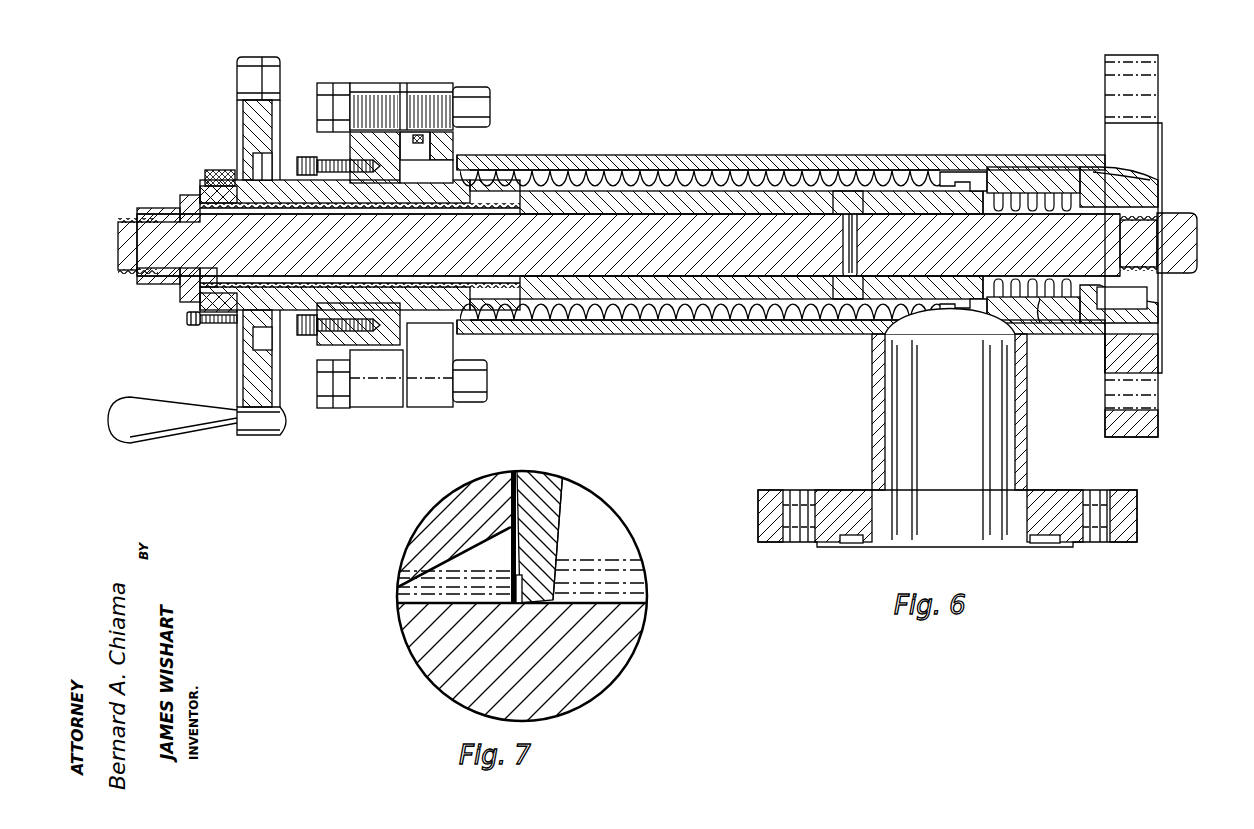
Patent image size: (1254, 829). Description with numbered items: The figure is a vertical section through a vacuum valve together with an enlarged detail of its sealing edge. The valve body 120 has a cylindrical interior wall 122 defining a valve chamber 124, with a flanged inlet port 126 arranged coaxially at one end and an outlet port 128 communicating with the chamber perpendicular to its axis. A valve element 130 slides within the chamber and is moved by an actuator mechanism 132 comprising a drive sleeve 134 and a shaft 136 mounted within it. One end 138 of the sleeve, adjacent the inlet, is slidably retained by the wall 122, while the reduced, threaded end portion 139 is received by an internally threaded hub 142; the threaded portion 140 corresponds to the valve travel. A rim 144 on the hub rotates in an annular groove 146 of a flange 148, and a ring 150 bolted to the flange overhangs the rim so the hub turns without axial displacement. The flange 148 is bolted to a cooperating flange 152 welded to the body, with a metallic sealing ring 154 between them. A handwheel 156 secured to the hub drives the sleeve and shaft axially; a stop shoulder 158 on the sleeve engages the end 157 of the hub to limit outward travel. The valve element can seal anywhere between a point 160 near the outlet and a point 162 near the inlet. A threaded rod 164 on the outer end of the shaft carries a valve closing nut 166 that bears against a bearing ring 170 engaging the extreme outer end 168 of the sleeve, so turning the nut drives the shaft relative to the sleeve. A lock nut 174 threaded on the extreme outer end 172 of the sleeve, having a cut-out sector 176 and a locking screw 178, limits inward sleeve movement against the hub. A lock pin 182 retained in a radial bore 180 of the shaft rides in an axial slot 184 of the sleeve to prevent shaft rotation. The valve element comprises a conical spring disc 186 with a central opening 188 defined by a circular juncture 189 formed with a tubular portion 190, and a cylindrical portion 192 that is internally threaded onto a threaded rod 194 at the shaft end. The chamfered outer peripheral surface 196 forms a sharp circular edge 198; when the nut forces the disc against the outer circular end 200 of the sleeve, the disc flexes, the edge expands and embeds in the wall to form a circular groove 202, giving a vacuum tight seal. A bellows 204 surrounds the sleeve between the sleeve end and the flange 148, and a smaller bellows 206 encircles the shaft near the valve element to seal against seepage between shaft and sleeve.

In FIG. 6, the valve body 120 is at (740, 165).
In FIG. 7, the valve body 120 is at (620, 625).
In FIG. 6, the cylindrical interior wall 122 is at (930, 172).
In FIG. 7, the cylindrical interior wall 122 is at (607, 600).
In FIG. 6, the valve chamber 124 is at (958, 178).
In FIG. 6, the flanged inlet port 126 is at (1160, 336).
In FIG. 6, the outlet port 128 is at (947, 527).
In FIG. 6, the valve element 130 is at (1174, 196).
In FIG. 6, the actuator mechanism 132 is at (760, 325).
In FIG. 6, the drive sleeve 134 is at (587, 207).
In FIG. 6, the shaft 136 is at (628, 210).
In FIG. 6, the end of the sleeve 138 is at (1066, 169).
In FIG. 7, the end of the sleeve 138 is at (478, 487).
In FIG. 6, the threaded end portion of the sleeve 139 is at (245, 330).
In FIG. 6, the threaded portion of the sleeve 140 is at (181, 300).
In FIG. 6, the internally threaded hub 142 is at (337, 326).
In FIG. 6, the rim 144 is at (342, 160).
In FIG. 6, the annular groove 146 is at (366, 288).
In FIG. 6, the flange 148 is at (373, 402).
In FIG. 6, the ring 150 is at (326, 375).
In FIG. 6, the cooperating flange 152 is at (434, 403).
In FIG. 6, the metallic sealing ring 154 is at (424, 139).
In FIG. 6, the handwheel 156 is at (247, 435).
In FIG. 6, the end of the hub 157 is at (356, 210).
In FIG. 6, the stop shoulder 158 is at (515, 180).
In FIG. 6, the point adjacent the outlet port 160 is at (949, 425).
In FIG. 6, the point adjacent the inlet port 162 is at (1163, 300).
In FIG. 6, the threaded rod 164 is at (119, 243).
In FIG. 6, the valve closing nut 166 is at (140, 284).
In FIG. 6, the extreme outer end of the drive sleeve 168 is at (182, 200).
In FIG. 6, the bearing ring 170 is at (212, 186).
In FIG. 6, the extreme outer end of the sleeve 172 is at (228, 208).
In FIG. 6, the lock nut 174 is at (224, 170).
In FIG. 6, the cut-out sector 176 is at (216, 325).
In FIG. 6, the screw 178 is at (187, 319).
In FIG. 6, the bore 180 is at (847, 192).
In FIG. 6, the lock pin 182 is at (833, 195).
In FIG. 6, the slot 184 is at (860, 190).
In FIG. 6, the conical spring disc 186 is at (1062, 307).
In FIG. 7, the conical spring disc 186 is at (563, 513).
In FIG. 6, the central opening 188 is at (628, 245).
In FIG. 6, the circular juncture 189 is at (1038, 322).
In FIG. 6, the tubular portion 190 is at (1122, 298).
In FIG. 6, the cylindrical portion 192 is at (1194, 267).
In FIG. 6, the threaded rod 194 is at (1180, 224).
In FIG. 7, the outer peripheral surface 196 is at (540, 603).
In FIG. 7, the sharp circular edge 198 is at (517, 580).
In FIG. 6, the outer circular end 200 is at (1100, 178).
In FIG. 7, the outer circular end 200 is at (538, 485).
In FIG. 7, the circular groove 202 is at (513, 603).
In FIG. 6, the bellows 204 is at (692, 313).
In FIG. 6, the smaller bellows 206 is at (1026, 195).